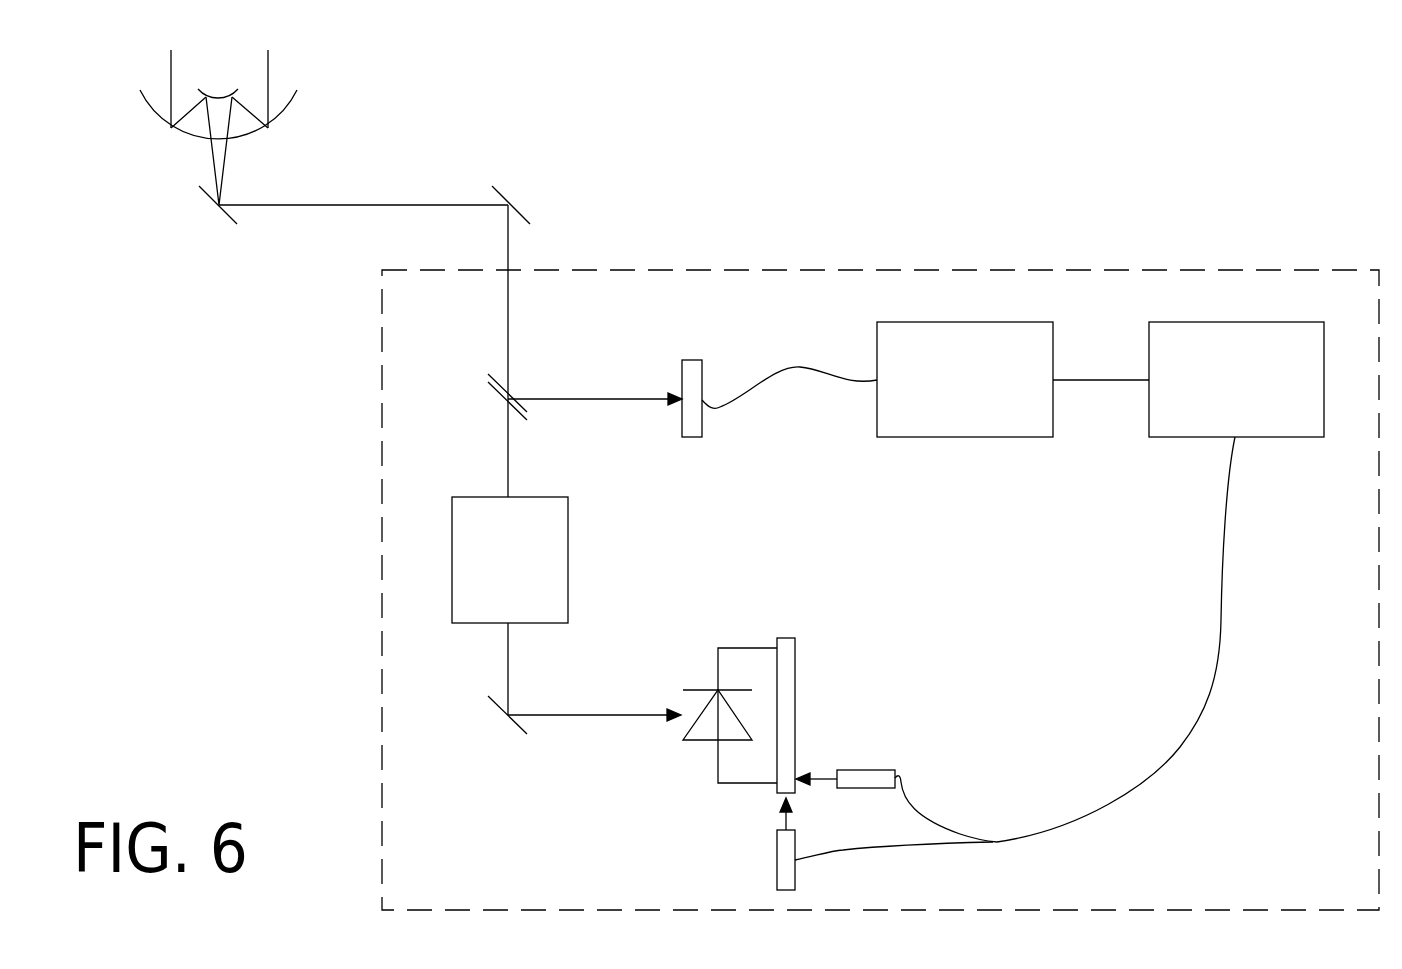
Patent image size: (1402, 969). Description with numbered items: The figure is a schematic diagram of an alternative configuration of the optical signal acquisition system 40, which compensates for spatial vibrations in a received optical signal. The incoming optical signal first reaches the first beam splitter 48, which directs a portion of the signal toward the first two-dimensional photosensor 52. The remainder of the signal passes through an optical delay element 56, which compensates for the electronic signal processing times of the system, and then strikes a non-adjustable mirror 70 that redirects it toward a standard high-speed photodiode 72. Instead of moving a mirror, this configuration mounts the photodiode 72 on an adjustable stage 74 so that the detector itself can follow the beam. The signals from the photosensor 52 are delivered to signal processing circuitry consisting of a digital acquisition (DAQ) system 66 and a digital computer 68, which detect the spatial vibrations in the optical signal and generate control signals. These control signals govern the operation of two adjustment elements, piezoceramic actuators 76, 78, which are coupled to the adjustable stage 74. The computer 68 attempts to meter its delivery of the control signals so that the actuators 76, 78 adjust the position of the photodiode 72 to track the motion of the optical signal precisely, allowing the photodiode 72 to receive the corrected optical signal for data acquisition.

The signal acquisition system 40 is at (1338, 889).
The first beam splitter 48 is at (496, 382).
The first 2-D photosensor 52 is at (693, 437).
The optical delay element 56 is at (568, 560).
The digital acquisition (DAQ) system 66 is at (965, 437).
The digital computer 68 is at (1193, 437).
The non-adjustable mirror 70 is at (517, 720).
The standard high-speed photodiode 72 is at (693, 740).
The adjustable stage 74 is at (797, 673).
The piezoceramic actuator 76 is at (777, 858).
The piezoceramic actuator 78 is at (865, 770).